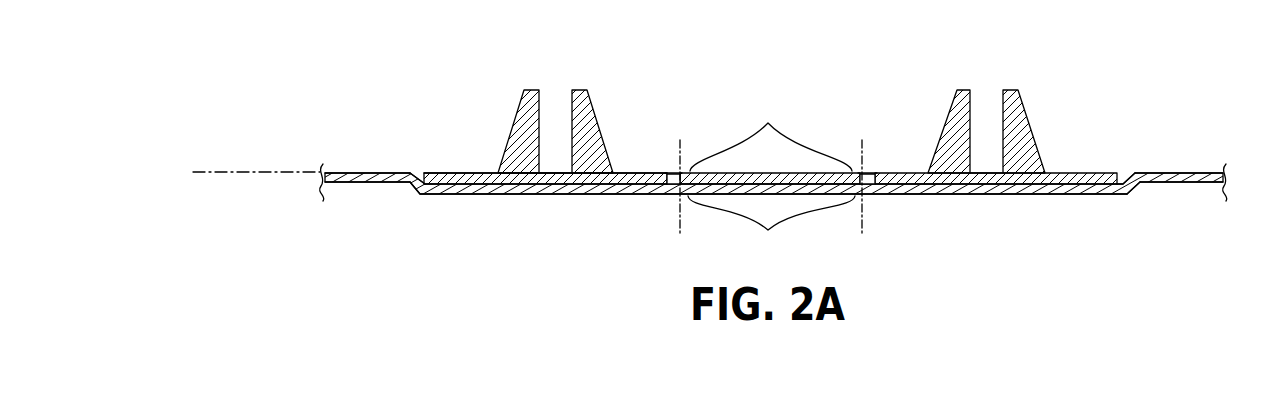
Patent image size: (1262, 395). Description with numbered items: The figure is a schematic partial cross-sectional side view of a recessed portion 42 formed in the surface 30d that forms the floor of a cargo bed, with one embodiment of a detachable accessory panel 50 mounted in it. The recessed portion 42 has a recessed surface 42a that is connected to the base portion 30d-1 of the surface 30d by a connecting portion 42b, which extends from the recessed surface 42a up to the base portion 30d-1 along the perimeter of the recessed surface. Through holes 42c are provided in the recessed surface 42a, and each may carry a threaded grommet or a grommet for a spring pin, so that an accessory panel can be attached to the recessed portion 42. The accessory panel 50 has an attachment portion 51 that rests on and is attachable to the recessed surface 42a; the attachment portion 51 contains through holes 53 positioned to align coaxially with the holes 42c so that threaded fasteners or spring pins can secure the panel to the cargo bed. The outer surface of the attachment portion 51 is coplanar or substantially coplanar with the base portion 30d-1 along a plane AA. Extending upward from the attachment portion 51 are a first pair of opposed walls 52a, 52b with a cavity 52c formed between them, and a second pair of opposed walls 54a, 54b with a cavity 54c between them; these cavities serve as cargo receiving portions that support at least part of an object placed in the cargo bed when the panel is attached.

The plane AA is at (218, 165).
The surface forming floor of the cargo bed 30d is at (1190, 171).
The base portion 30d-1 is at (1155, 172).
The recessed portion 42 is at (975, 196).
The recessed surface 42a is at (480, 196).
The connecting portion 42b is at (412, 190).
The through holes 42c is at (771, 225).
The accessory panel 50 is at (483, 172).
The attachment portion 51 is at (440, 172).
The first opposed wall 52a is at (517, 118).
The second opposed wall 52b is at (585, 115).
The cavity 52c is at (557, 105).
The through holes 53 is at (770, 143).
The first opposed wall of second pair 54a is at (950, 118).
The second opposed wall of second pair 54b is at (1020, 120).
The cavity 54c is at (985, 105).